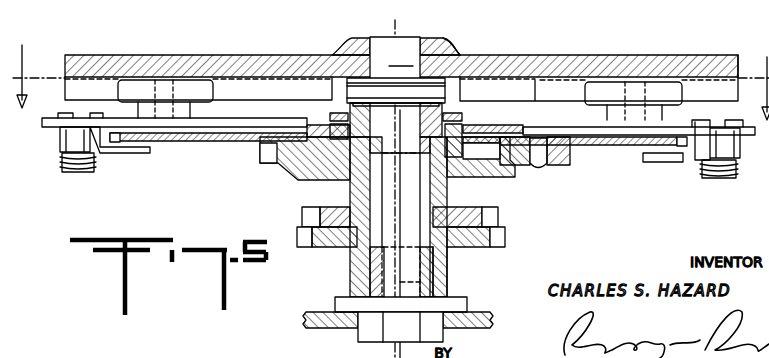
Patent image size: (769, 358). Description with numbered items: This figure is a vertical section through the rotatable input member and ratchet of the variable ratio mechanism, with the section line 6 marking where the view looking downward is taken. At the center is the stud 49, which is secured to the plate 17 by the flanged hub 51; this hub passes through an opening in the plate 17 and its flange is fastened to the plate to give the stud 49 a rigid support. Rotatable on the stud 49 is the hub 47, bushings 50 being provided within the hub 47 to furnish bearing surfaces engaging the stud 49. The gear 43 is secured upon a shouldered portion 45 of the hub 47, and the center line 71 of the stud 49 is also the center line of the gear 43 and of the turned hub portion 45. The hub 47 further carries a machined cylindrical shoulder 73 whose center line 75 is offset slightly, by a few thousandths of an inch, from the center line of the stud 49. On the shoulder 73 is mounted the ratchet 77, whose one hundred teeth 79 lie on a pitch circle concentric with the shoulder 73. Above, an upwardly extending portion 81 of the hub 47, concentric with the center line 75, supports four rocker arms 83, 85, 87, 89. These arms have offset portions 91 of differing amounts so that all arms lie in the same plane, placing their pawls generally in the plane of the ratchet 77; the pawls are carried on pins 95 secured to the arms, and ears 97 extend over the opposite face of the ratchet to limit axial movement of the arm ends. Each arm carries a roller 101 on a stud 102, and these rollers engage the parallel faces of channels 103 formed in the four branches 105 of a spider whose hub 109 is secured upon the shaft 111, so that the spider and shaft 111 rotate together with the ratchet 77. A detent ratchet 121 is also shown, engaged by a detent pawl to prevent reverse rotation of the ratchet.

The section line 6 is at (387, 82).
The plate 17 is at (470, 312).
The gear 43 is at (483, 248).
The shouldered portion of hub 45 is at (444, 262).
The hub 47 is at (456, 180).
The stud 49 is at (375, 263).
The bushings 50 is at (378, 140).
The flanged hub 51 is at (372, 338).
The center line of stud 71 is at (436, 283).
The cylindrical shoulder 73 is at (263, 147).
The center line of shoulder 75 is at (352, 250).
The ratchet 77 is at (190, 142).
The ratchet teeth 79 is at (126, 158).
The upwardly extending portion of hub 81 is at (330, 168).
The rocker arm 83 is at (330, 118).
The rocker arm 85 is at (466, 152).
The rocker arm 87 is at (262, 118).
The rocker arm 89 is at (560, 128).
The offset portions 91 is at (310, 142).
The pins 95 is at (68, 170).
The ears 97 is at (118, 140).
The roller 101 is at (127, 88).
The stud 102 is at (171, 54).
The channels 103 is at (73, 88).
The branches of spider 105 is at (95, 61).
The hub of spider 109 is at (453, 42).
The shaft 111 is at (395, 58).
The detent ratchet 121 is at (497, 220).